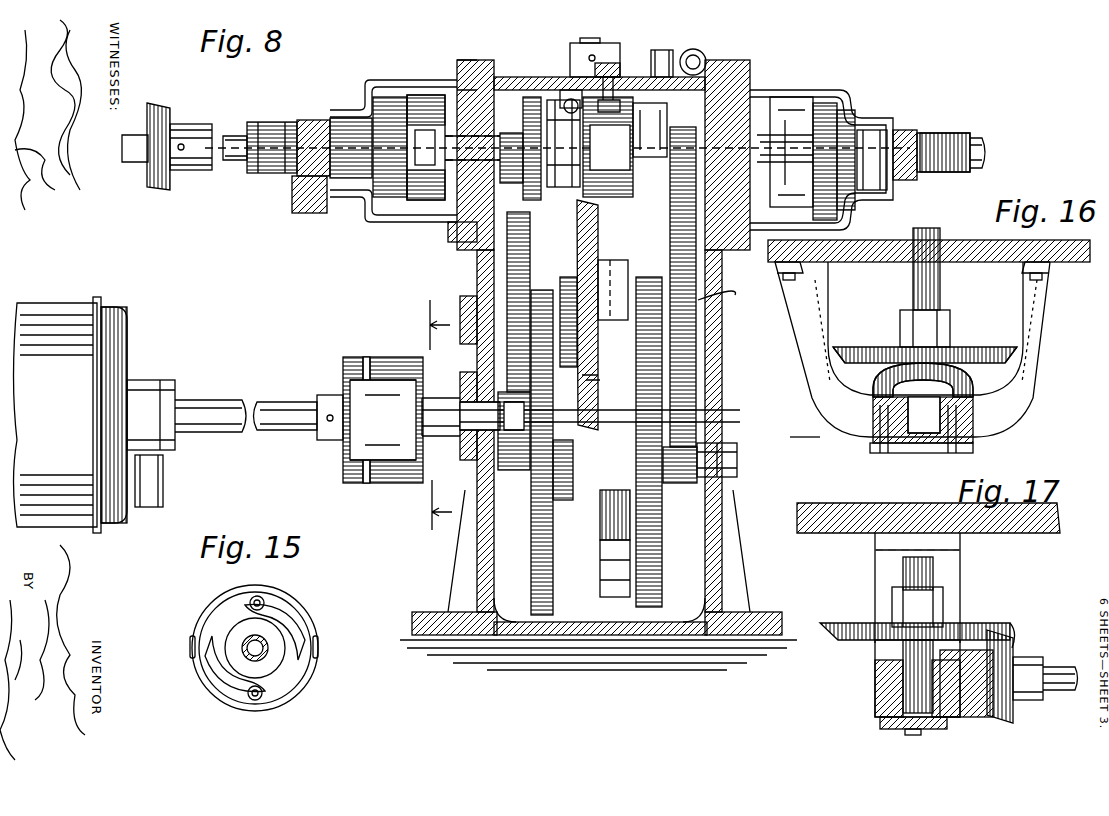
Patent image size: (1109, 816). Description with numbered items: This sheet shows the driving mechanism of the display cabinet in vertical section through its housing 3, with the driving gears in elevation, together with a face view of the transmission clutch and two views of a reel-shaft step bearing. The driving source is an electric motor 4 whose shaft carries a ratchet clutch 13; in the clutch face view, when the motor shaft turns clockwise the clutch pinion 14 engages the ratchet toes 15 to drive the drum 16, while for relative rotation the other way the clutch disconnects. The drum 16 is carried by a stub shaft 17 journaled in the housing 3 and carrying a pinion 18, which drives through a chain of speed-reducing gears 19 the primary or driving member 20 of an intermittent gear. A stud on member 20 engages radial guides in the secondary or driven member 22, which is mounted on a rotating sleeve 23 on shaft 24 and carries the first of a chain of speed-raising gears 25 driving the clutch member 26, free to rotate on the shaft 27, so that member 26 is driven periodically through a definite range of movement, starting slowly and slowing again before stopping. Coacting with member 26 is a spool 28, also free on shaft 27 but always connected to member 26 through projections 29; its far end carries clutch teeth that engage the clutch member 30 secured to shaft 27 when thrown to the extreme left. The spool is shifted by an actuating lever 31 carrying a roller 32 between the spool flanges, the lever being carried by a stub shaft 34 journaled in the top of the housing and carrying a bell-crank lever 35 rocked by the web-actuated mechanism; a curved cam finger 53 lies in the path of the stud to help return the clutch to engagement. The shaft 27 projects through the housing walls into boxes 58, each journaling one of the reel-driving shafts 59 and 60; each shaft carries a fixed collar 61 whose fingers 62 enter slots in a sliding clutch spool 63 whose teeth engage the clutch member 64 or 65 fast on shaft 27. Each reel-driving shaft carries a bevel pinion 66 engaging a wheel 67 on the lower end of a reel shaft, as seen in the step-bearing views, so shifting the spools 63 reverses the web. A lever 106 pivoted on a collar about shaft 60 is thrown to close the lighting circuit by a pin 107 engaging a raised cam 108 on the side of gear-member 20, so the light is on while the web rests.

In FIG. 8, the housing 3 is at (720, 386).
In FIG. 16, the housing 3 is at (905, 349).
In FIG. 8, the electric motor 4 is at (68, 310).
In FIG. 15, the ratchet clutch 13 is at (292, 630).
In FIG. 15, the clutch pinion 14 is at (282, 642).
In FIG. 8, the ratchet toes 15 is at (448, 415).
In FIG. 15, the ratchet toes 15 is at (268, 685).
In FIG. 8, the drum 16 is at (380, 358).
In FIG. 15, the drum 16 is at (203, 623).
In FIG. 8, the stub shaft 17 is at (432, 400).
In FIG. 8, the pinion 18 is at (516, 478).
In FIG. 8, the speed-reducing gears 19 is at (541, 288).
In FIG. 8, the primary or driving member of intermittent gear 20 is at (603, 268).
In FIG. 8, the secondary or driven member of intermittent gear 22 is at (600, 590).
In FIG. 8, the rotating sleeve 23 is at (692, 484).
In FIG. 8, the shaft 24 is at (738, 464).
In FIG. 16, the shaft 24 is at (790, 448).
In FIG. 8, the speed-raising gears 25 is at (660, 286).
In FIG. 8, the clutch member 26 is at (668, 106).
In FIG. 8, the shaft 27 is at (562, 152).
In FIG. 8, the spool 28 is at (617, 262).
In FIG. 8, the projections 29 is at (672, 252).
In FIG. 8, the clutch member 30 is at (528, 100).
In FIG. 8, the actuating lever 31 is at (613, 107).
In FIG. 8, the roller 32 is at (622, 120).
In FIG. 8, the stub shaft 34 is at (566, 92).
In FIG. 8, the bell-crank lever 35 is at (634, 62).
In FIG. 8, the curved cam finger 53 is at (650, 268).
In FIG. 8, the boxes 58 is at (395, 82).
In FIG. 8, the reel-driving shaft 59 is at (988, 152).
In FIG. 8, the reel-driving shaft 60 is at (236, 140).
In FIG. 8, the fixed collar 61 is at (906, 132).
In FIG. 8, the fingers 62 is at (870, 134).
In FIG. 8, the sliding clutch spool 63 is at (362, 130).
In FIG. 8, the clutch member 64 is at (469, 62).
In FIG. 8, the clutch member 65 is at (748, 148).
In FIG. 8, the bevel pinion 66 is at (152, 112).
In FIG. 16, the bevel pinion 66 is at (960, 382).
In FIG. 17, the bevel pinion 66 is at (1015, 652).
In FIG. 16, the wheels 67 is at (958, 348).
In FIG. 17, the wheels 67 is at (975, 625).
In FIG. 8, the lever 106 is at (310, 204).
In FIG. 8, the pin 107 is at (468, 244).
In FIG. 8, the raised cam 108 is at (585, 385).